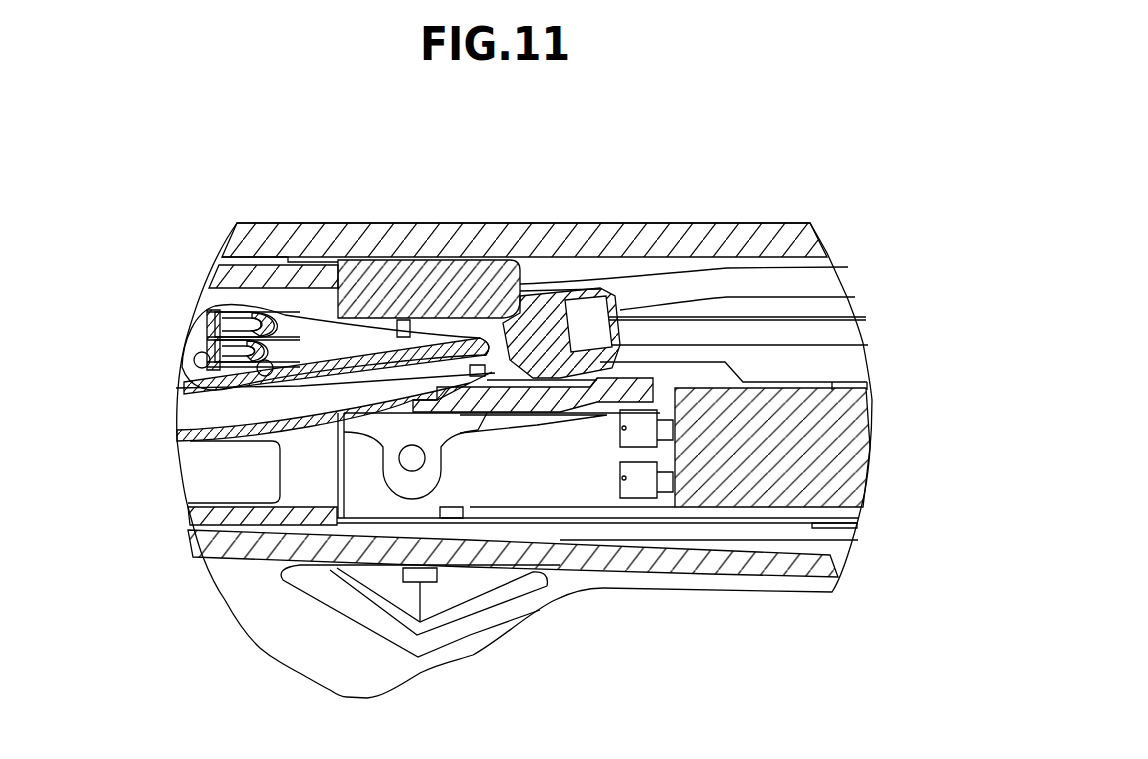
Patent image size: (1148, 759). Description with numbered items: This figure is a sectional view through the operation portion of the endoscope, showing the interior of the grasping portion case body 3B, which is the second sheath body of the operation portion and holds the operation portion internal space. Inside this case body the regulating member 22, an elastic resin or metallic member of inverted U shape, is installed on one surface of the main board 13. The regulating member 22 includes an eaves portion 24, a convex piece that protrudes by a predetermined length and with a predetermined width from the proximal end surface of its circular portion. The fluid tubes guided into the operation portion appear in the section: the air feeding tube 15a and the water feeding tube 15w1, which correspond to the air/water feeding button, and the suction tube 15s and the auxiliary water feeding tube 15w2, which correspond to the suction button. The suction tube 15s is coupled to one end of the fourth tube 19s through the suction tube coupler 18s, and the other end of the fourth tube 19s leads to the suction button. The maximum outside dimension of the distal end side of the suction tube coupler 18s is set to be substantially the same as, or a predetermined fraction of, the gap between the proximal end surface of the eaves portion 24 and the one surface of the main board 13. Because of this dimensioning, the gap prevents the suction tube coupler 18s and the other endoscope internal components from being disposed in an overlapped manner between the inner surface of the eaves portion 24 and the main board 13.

The grasping portion case body 3B is at (715, 226).
The main board 13 is at (475, 400).
The air feeding tube 15a is at (778, 283).
The suction tube 15s is at (188, 406).
The water feeding tube 15w1 is at (207, 368).
The auxiliary water feeding tube 15w2 is at (207, 305).
The suction tube coupler 18s is at (590, 290).
The fourth tube 19s is at (840, 333).
The regulating member 22 is at (392, 257).
The eaves portion 24 is at (487, 258).